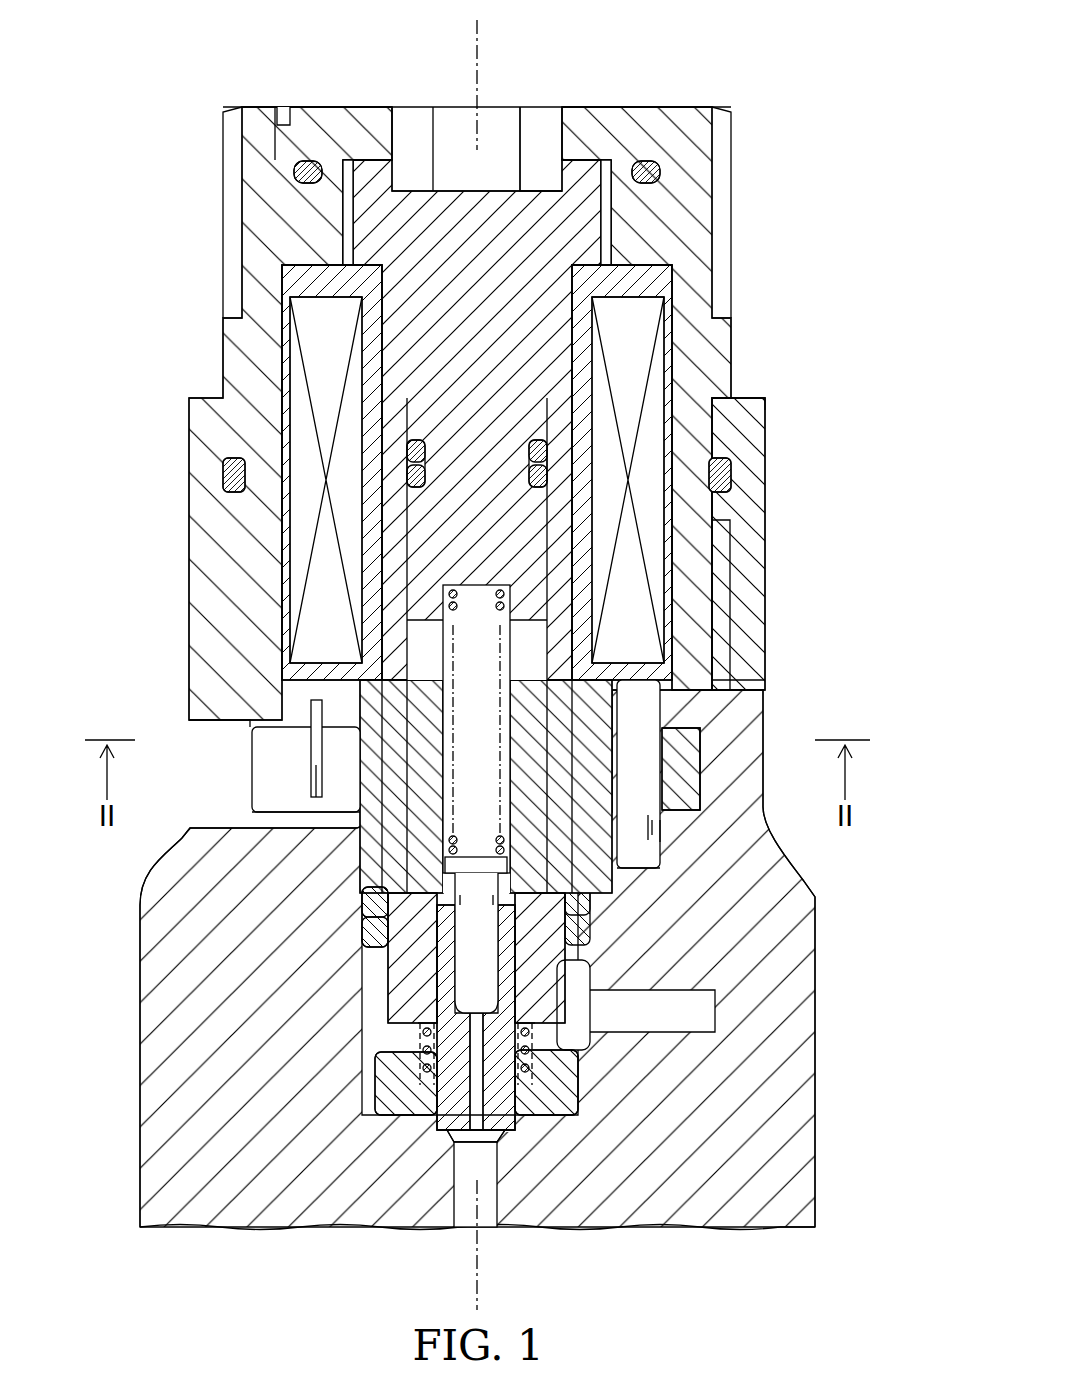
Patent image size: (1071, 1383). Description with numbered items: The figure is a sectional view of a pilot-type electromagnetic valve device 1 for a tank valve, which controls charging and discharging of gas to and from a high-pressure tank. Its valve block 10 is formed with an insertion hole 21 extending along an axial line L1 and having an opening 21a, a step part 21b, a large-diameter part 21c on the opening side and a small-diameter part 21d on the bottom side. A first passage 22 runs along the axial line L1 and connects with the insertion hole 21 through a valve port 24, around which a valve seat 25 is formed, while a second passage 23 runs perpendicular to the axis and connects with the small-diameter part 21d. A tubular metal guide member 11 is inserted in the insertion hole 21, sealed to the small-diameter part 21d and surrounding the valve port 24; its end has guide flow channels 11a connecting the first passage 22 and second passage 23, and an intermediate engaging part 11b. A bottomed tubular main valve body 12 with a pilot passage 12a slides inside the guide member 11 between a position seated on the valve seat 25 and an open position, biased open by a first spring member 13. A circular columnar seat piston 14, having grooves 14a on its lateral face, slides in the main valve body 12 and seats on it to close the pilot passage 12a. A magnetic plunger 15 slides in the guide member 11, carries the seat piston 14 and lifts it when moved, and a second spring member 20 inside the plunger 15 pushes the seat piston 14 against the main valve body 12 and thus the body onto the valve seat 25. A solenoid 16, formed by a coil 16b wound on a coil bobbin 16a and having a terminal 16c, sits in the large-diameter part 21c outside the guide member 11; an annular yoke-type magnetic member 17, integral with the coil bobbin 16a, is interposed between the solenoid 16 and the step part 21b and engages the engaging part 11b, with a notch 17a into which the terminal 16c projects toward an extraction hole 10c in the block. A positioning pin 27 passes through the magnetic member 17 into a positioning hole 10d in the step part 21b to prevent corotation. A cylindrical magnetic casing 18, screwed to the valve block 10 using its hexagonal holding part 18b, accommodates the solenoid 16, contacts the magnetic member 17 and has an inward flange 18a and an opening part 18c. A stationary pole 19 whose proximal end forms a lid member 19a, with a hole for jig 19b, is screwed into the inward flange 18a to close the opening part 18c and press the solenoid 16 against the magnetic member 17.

The valve device 1 is at (758, 96).
The valve block 10 is at (150, 1000).
The extraction hole 10c is at (192, 722).
The positioning hole 10d is at (662, 842).
The guide member 11 is at (392, 630).
The guide flow channels 11a is at (540, 1070).
The engaging part 11b is at (605, 842).
The main valve body 12 is at (432, 992).
The pilot passage 12a is at (498, 1132).
The first spring member 13 is at (400, 1058).
The seat piston 14 is at (448, 862).
The grooves 14a is at (448, 950).
The plunger 15 is at (447, 600).
The solenoid 16 is at (385, 472).
The coil bobbin 16a is at (288, 280).
The coil 16b is at (294, 352).
The terminal 16c is at (311, 779).
The magnetic member 17 is at (703, 742).
The notch 17a is at (288, 813).
The casing 18 is at (235, 447).
The inward flange 18a is at (622, 162).
The holding part 18b is at (725, 212).
The opening part 18c is at (284, 106).
The stationary pole 19 is at (574, 330).
The lid member 19a is at (372, 106).
The hole for jig 19b is at (560, 128).
The second spring member 20 is at (500, 590).
The insertion hole 21 is at (732, 522).
The opening 21a is at (742, 396).
The step part 21b is at (692, 808).
The large-diameter part 21c is at (712, 682).
The small-diameter part 21d is at (578, 960).
The first passage 22 is at (465, 1233).
The second passage 23 is at (655, 1032).
The valve port 24 is at (500, 1175).
The valve seat 25 is at (442, 1126).
The positioning pin 27 is at (640, 680).
The axial line L1 is at (480, 1250).